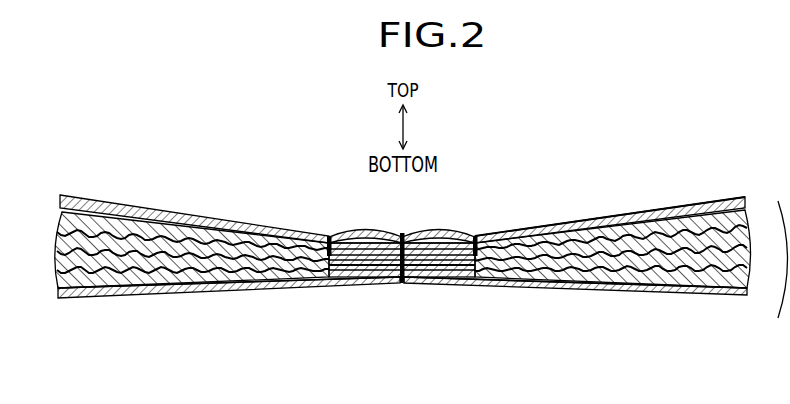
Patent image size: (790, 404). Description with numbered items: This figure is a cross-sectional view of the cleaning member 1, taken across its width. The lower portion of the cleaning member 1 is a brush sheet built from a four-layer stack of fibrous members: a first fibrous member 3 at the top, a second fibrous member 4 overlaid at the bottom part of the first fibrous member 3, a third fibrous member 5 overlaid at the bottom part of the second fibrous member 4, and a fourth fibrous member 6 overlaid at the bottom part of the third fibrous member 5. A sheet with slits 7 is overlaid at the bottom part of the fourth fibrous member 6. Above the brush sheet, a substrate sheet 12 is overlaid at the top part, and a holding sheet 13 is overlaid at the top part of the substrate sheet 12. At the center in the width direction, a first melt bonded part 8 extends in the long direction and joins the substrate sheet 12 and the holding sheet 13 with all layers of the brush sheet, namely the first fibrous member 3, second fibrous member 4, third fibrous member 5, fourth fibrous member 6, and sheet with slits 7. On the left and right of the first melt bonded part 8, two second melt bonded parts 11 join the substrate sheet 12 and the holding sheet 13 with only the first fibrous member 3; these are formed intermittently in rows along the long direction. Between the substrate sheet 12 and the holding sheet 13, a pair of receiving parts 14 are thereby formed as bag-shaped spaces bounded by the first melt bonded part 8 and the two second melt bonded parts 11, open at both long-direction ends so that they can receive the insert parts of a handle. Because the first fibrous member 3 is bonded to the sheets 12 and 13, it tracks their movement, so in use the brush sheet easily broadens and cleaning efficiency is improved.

The cleaning member 1 is at (593, 168).
The first fibrous member 3 is at (748, 221).
The second fibrous member 4 is at (749, 238).
The third fibrous member 5 is at (750, 259).
The fourth fibrous member 6 is at (749, 281).
The sheet with slits 7 is at (749, 295).
The first melt bonded part 8 is at (403, 232).
The second melt bonded parts 11 is at (329, 236).
The substrate sheet 12 is at (748, 206).
The holding sheet 13 is at (726, 200).
The receiving parts 14 is at (364, 237).